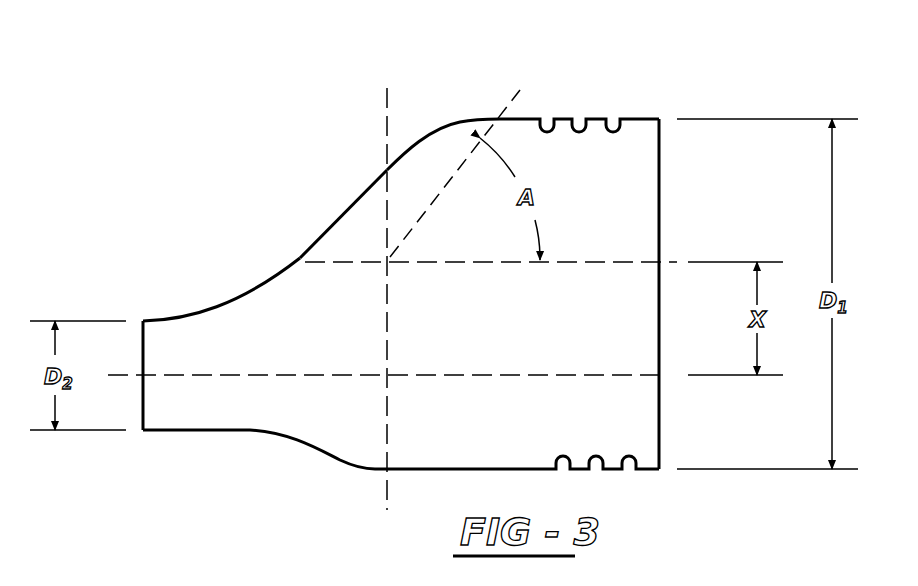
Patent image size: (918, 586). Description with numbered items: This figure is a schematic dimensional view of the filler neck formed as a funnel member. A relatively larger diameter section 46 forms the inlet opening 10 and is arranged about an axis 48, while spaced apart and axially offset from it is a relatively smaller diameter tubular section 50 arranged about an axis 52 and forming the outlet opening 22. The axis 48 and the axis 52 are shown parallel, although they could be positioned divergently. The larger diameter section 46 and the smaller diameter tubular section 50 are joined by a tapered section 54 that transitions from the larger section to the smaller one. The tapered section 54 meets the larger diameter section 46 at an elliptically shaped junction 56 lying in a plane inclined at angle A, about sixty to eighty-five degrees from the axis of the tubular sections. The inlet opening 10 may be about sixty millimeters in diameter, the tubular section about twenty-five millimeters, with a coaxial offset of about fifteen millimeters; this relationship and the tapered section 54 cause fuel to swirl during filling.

The inlet opening 10 is at (632, 182).
The outlet opening 22 is at (182, 342).
The larger diameter section 46 is at (640, 116).
The axis 48 is at (580, 263).
The smaller diameter tubular section 50 is at (149, 317).
The axis 52 is at (325, 373).
The tapered section 54 is at (378, 172).
The elliptically shaped junction 56 is at (456, 117).